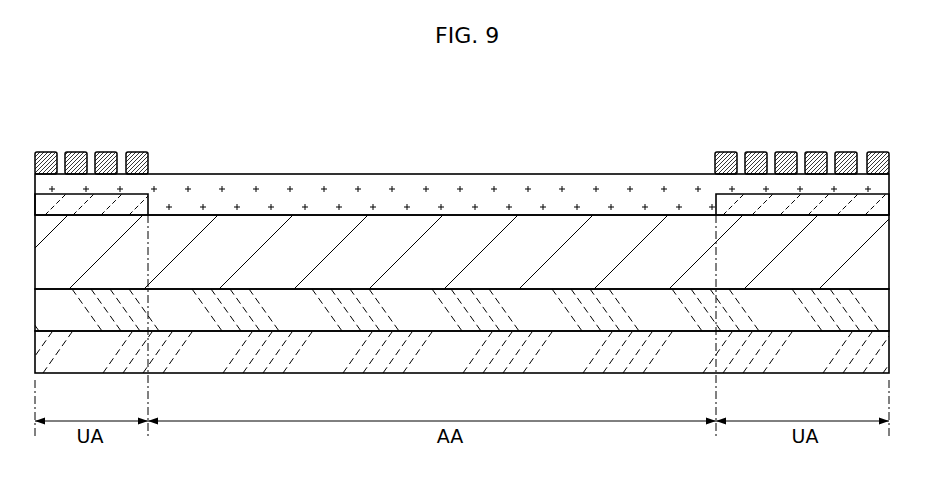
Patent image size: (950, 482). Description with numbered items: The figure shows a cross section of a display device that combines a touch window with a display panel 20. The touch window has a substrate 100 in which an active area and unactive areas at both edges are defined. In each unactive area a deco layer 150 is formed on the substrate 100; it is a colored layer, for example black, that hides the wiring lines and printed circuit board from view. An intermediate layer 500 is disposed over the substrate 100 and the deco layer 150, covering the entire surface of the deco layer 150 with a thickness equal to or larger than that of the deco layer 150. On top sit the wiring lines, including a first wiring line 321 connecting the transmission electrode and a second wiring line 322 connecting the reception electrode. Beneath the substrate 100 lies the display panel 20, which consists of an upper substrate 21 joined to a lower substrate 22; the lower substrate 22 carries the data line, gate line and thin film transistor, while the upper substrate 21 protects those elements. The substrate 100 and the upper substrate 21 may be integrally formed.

The display panel 20 is at (223, 118).
The upper substrate 21 is at (300, 305).
The lower substrate 22 is at (235, 343).
The substrate 100 is at (460, 228).
The deco layer 150 is at (813, 205).
The first wiring line 321 is at (870, 151).
The second wiring line 322 is at (725, 151).
The intermediate layer 500 is at (634, 182).